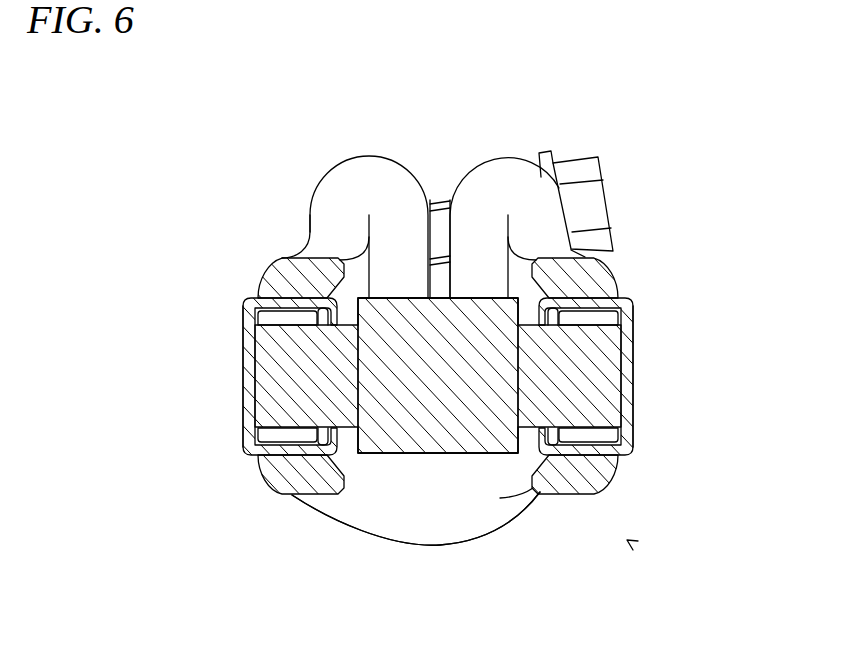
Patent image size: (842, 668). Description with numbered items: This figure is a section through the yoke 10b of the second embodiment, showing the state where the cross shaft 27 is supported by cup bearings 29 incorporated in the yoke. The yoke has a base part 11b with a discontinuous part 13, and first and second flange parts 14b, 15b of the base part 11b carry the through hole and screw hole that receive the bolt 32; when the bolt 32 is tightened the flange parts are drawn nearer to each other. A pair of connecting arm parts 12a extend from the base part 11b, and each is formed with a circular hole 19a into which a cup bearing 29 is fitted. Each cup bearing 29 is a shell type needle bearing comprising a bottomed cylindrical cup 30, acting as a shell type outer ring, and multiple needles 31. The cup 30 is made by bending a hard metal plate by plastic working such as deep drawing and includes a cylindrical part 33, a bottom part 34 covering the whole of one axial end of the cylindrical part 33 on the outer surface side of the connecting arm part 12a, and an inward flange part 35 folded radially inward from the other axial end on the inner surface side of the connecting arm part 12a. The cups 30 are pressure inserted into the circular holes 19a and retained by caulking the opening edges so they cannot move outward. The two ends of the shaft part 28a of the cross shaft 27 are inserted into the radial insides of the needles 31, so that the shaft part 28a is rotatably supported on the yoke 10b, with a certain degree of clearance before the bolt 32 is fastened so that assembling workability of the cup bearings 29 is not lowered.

The yoke 10b is at (627, 540).
The base part 11b is at (408, 523).
The connecting arm part 12a is at (277, 488).
The discontinuous part 13 is at (445, 222).
The first flange part 14b is at (493, 175).
The second flange part 15b is at (367, 158).
The circular hole 19a is at (258, 458).
The cross shaft 27 is at (443, 430).
The shaft part 28a is at (602, 400).
The cup bearing 29 is at (250, 400).
The cup 30 is at (250, 366).
The needle 31 is at (270, 317).
The bolt 32 is at (592, 207).
The cylindrical part 33 is at (292, 300).
The bottom part 34 is at (250, 335).
The inward flange part 35 is at (337, 437).